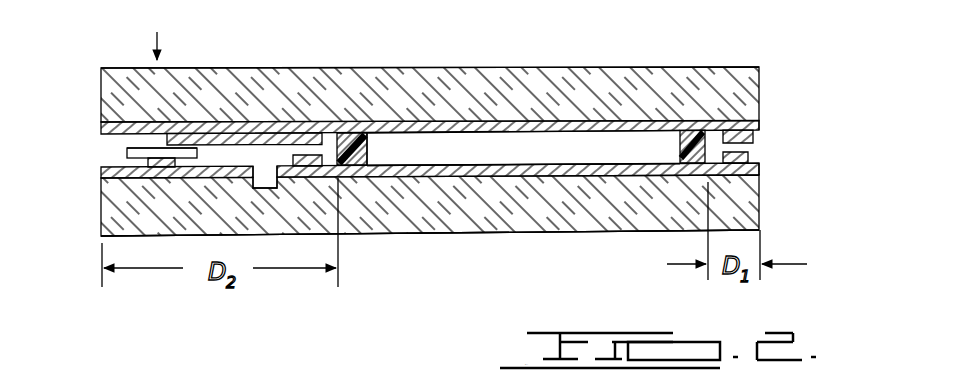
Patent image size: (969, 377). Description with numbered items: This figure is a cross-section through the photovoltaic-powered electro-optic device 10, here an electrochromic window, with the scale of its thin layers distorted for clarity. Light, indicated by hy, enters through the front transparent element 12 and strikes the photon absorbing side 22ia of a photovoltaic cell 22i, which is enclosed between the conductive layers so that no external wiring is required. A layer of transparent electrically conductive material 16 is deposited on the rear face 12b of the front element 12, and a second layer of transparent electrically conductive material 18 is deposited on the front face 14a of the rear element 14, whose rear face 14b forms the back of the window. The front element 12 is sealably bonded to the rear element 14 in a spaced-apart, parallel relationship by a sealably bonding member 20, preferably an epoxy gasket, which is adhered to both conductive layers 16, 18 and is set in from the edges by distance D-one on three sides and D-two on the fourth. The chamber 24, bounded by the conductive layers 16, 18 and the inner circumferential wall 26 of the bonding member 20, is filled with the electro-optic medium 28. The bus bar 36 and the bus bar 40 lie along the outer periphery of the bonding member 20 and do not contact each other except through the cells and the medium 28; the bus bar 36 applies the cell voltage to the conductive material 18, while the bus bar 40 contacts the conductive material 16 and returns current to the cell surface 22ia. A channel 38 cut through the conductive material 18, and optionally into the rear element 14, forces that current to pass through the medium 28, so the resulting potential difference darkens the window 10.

The electro-optic device 10 is at (212, 300).
The first transparent element 12 is at (738, 72).
The rear face 12b is at (676, 121).
The rear element 14 is at (760, 215).
The front face 14a is at (617, 170).
The rear face 14b is at (560, 233).
The transparent electrically conductive material 16 is at (758, 125).
The transparent electrically conductive material 18 is at (758, 170).
The sealably bonding member 20 is at (347, 142).
The photovoltaic cell 22i is at (120, 155).
The photon absorbing side 22ia is at (127, 147).
The chamber 24 is at (484, 160).
The inner circumferential wall 26 is at (367, 148).
The electro-optic medium 28 is at (533, 150).
The bus bar 36 is at (152, 160).
The channel 38 is at (263, 183).
The bus bar 40 is at (237, 138).
The incident light (h nu) hy is at (165, 32).